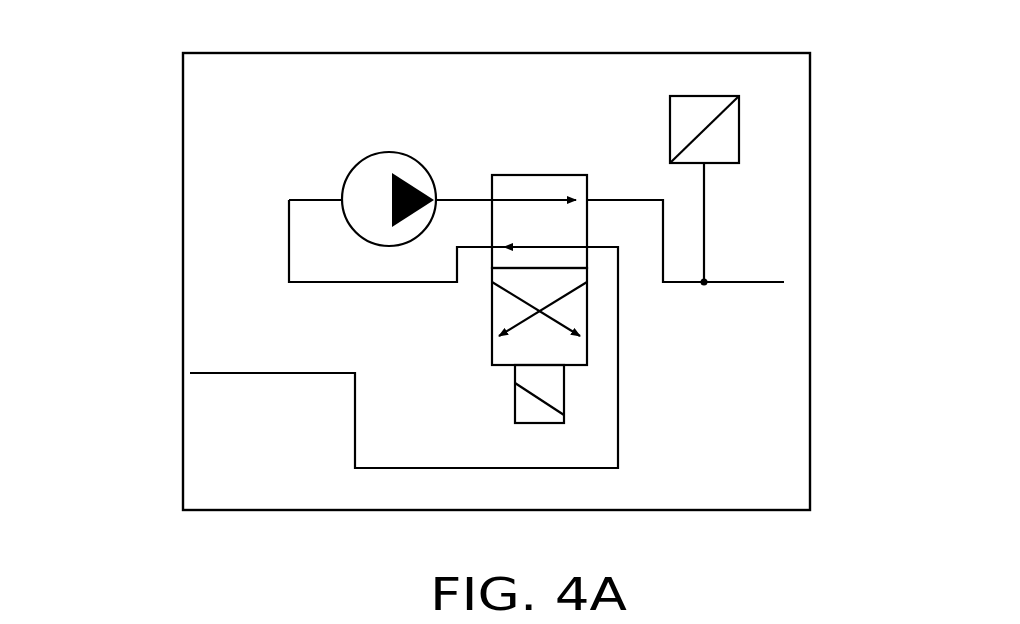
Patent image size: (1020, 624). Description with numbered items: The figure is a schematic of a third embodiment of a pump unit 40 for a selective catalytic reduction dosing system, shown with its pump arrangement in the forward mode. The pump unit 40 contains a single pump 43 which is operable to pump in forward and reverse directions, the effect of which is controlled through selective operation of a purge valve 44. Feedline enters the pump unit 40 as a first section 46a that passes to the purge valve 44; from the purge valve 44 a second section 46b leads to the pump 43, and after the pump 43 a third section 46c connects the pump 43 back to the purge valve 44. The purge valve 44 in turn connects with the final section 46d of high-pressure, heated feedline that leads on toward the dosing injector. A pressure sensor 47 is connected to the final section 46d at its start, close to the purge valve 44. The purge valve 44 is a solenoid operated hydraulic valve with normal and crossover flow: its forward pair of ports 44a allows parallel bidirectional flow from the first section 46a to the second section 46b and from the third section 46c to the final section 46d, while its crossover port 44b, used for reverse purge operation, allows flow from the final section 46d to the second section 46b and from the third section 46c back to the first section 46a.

The pump unit 40 is at (181, 70).
The pump 43 is at (381, 152).
The purge valve 44 is at (510, 280).
The forward pair of ports 44a is at (547, 175).
The crossover port 44b is at (490, 318).
The first section of feedline 46a is at (215, 373).
The second section of feedline 46b is at (305, 282).
The third section of feedline 46c is at (455, 200).
The final section of feedline 46d is at (752, 282).
The pressure sensor 47 is at (739, 96).